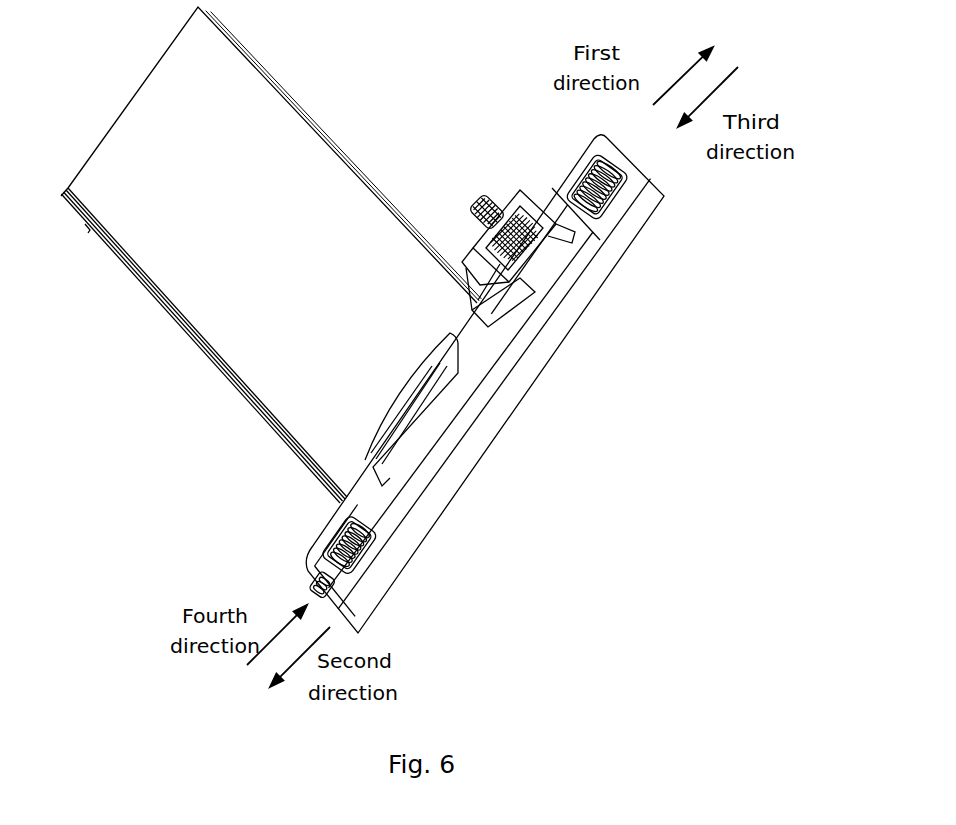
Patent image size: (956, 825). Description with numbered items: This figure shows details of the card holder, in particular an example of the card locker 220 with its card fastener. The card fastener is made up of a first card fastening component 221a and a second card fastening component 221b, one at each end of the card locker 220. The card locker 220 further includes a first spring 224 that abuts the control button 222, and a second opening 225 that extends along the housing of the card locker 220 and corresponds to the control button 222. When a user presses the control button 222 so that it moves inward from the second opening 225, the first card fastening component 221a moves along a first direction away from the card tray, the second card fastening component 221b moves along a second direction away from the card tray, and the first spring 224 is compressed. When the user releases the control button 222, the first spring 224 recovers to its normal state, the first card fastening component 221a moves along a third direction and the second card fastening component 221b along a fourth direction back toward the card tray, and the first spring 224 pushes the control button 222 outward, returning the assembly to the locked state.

The card locker 220 is at (408, 552).
The first card fastening component 221a is at (568, 220).
The second card fastening component 221b is at (362, 523).
The control button 222 is at (538, 282).
The first spring 224 is at (480, 218).
The second opening 225 is at (585, 289).